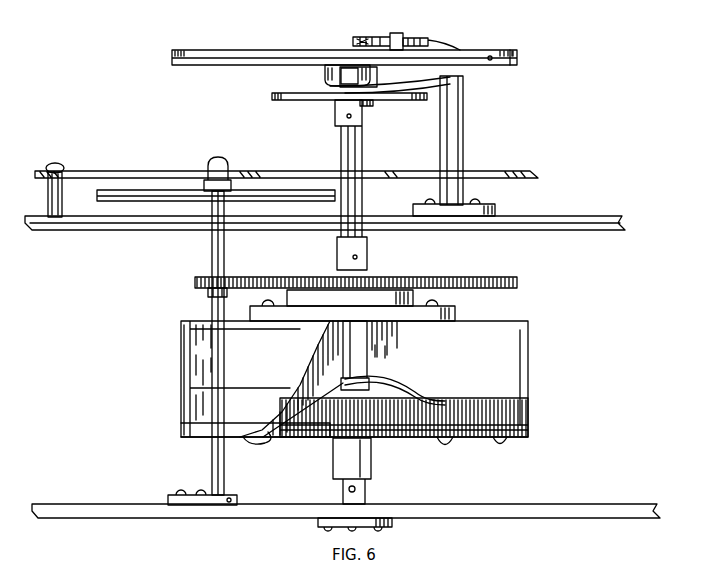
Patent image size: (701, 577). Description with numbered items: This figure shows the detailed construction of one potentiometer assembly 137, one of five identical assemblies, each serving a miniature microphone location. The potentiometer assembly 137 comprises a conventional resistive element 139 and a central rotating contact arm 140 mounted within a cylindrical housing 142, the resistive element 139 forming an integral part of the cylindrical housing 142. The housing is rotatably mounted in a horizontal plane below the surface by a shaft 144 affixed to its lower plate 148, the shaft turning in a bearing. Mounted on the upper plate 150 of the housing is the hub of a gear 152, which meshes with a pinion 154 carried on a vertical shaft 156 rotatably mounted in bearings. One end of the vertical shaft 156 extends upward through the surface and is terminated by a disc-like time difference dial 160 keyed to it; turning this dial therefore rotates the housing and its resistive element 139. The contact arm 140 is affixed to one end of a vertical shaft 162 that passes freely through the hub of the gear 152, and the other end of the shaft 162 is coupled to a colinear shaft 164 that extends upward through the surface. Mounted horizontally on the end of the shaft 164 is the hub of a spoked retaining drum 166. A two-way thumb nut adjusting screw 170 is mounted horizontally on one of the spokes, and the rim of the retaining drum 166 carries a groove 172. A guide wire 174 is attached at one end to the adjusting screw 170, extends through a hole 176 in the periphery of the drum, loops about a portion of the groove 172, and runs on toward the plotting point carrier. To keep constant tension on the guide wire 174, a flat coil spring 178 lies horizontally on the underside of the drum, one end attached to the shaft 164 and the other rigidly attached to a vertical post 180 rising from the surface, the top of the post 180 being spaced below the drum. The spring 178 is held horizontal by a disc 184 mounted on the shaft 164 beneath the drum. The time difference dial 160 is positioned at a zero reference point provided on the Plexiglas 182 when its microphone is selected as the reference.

The potentiometer assembly 137 is at (315, 382).
The resistive element 139 is at (518, 415).
The contact arm 140 is at (402, 398).
The cylindrical housing 142 is at (188, 373).
The shaft 144 is at (369, 472).
The lower plate 148 is at (197, 440).
The upper plate 150 is at (195, 320).
The gear 152 is at (500, 287).
The pinion 154 is at (230, 277).
The vertical shaft 156 is at (212, 253).
The time difference dial 160 is at (150, 192).
The vertical shaft 162 is at (372, 339).
The shaft 164 is at (360, 151).
The retaining drum 166 is at (205, 50).
The thumb nut adjusting screw 170 is at (410, 38).
The groove 172 is at (522, 65).
The guide wire 174 is at (436, 48).
The hole 176 is at (492, 61).
The flat coil spring 178 is at (322, 77).
The post 180 is at (457, 148).
The Plexiglas 182 is at (522, 172).
The disc 184 is at (290, 101).